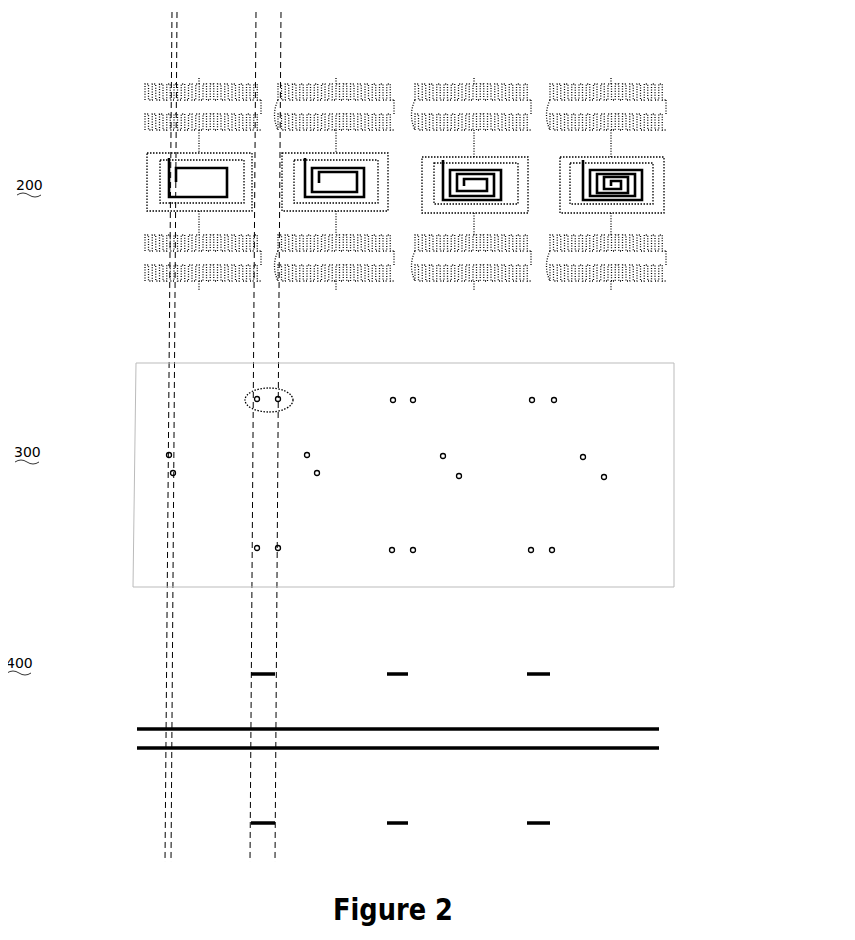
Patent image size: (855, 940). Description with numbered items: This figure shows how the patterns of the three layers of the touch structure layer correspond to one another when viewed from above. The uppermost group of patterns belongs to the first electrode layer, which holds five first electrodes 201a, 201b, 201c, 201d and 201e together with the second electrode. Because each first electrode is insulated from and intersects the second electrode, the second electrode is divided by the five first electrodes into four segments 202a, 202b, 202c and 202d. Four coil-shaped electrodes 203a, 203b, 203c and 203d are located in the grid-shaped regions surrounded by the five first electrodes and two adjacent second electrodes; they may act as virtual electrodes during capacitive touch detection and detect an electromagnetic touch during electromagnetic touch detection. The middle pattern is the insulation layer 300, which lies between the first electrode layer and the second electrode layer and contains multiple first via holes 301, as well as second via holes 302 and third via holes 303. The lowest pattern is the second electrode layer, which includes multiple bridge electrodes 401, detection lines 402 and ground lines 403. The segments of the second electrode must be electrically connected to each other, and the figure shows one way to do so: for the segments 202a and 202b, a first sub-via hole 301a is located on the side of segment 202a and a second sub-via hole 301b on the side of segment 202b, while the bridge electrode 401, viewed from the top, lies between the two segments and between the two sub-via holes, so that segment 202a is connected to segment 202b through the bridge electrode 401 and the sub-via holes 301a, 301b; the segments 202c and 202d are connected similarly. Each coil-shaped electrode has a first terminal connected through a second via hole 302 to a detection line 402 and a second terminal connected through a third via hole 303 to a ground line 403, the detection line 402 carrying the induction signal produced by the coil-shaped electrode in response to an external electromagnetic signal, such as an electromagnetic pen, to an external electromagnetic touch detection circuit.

The first electrode 201a is at (153, 142).
The first electrode 201b is at (292, 138).
The first electrode 201c is at (418, 150).
The first electrode 201d is at (568, 110).
The first electrode 201e is at (665, 152).
The segment of second electrode 202a is at (187, 110).
The segment of second electrode 202b is at (366, 108).
The segment of second electrode 202c is at (507, 110).
The segment of second electrode 202d is at (641, 110).
The coil-shaped electrode 203a is at (158, 202).
The coil-shaped electrode 203b is at (366, 203).
The coil-shaped electrode 203c is at (511, 203).
The coil-shaped electrode 203d is at (655, 210).
The insulation layer 300 is at (403, 475).
The first via hole 301 is at (253, 398).
The first sub-via hole 301a is at (254, 398).
The second sub-via hole 301b is at (278, 398).
The second via hole 302 is at (166, 455).
The third via hole 303 is at (171, 473).
The bridge electrode 401 is at (265, 670).
The detection line 402 is at (617, 727).
The ground line 403 is at (625, 750).